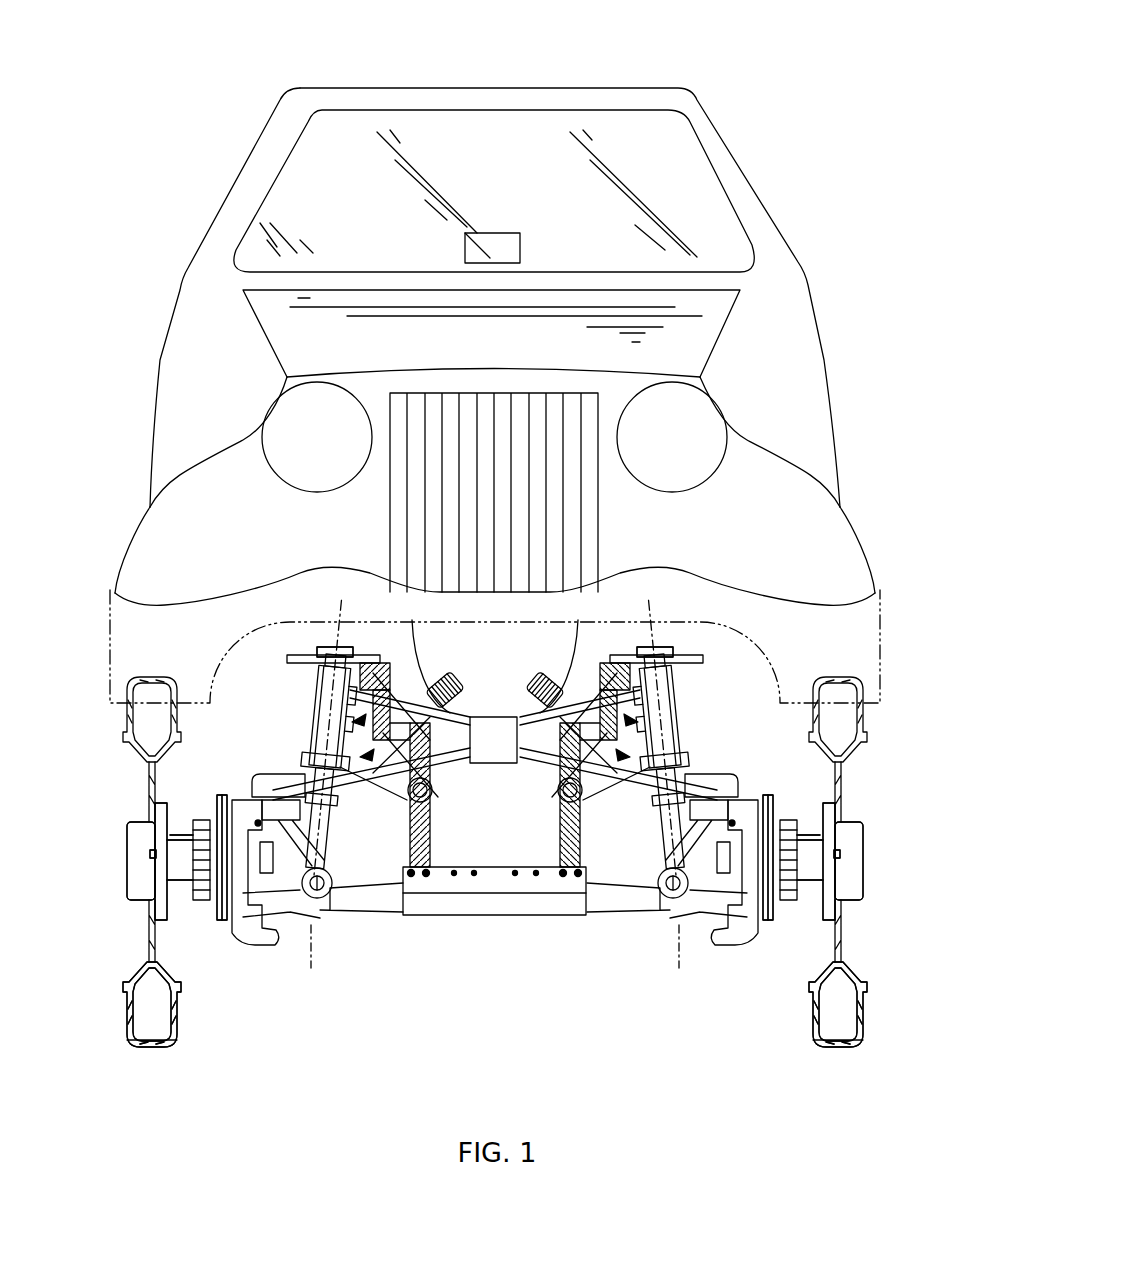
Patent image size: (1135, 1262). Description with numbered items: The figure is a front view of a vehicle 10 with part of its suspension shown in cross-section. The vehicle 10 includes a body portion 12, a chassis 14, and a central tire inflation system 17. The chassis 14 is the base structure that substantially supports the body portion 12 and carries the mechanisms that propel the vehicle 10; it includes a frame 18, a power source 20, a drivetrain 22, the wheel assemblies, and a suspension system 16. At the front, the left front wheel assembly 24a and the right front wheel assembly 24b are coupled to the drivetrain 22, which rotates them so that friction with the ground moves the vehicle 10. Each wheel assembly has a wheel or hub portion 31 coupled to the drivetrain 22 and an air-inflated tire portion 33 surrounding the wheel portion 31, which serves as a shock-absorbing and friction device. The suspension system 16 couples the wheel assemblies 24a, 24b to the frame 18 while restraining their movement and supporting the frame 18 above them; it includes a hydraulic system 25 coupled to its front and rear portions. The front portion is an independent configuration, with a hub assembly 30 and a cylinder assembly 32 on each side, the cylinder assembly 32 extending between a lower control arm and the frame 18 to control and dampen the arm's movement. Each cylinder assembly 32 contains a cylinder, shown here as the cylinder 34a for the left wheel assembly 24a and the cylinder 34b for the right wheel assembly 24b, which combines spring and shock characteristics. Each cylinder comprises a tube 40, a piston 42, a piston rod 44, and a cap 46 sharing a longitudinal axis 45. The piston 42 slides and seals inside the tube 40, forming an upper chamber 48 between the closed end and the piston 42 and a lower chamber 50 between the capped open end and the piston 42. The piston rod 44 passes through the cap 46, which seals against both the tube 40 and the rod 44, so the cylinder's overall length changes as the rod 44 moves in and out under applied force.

The vehicle 10 is at (735, 74).
The body portion 12 is at (826, 308).
The chassis 14 is at (259, 695).
The suspension system 16 is at (728, 697).
The central tire inflation system 17 is at (492, 232).
The frame 18 is at (300, 655).
The power source 20 is at (505, 632).
The drivetrain 22 is at (525, 680).
The left front wheel assembly 24a is at (875, 854).
The right front wheel assembly 24b is at (114, 854).
The hydraulic system 25 is at (493, 764).
The hub assembly 30 is at (177, 885).
The wheel or hub portion 31 is at (140, 982).
The cylinder assembly 32 is at (433, 778).
The tire portion 33 is at (130, 1040).
The cylinder corresponding to wheel assembly 24a 34a is at (568, 668).
The cylinder corresponding to wheel assembly 24b 34b is at (420, 668).
The tube 40 is at (318, 688).
The piston 42 is at (325, 757).
The piston rod 44 is at (328, 864).
The longitudinal axis 45 is at (312, 932).
The cap 46 is at (338, 830).
The upper chamber 48 is at (319, 647).
The lower chamber 50 is at (307, 780).